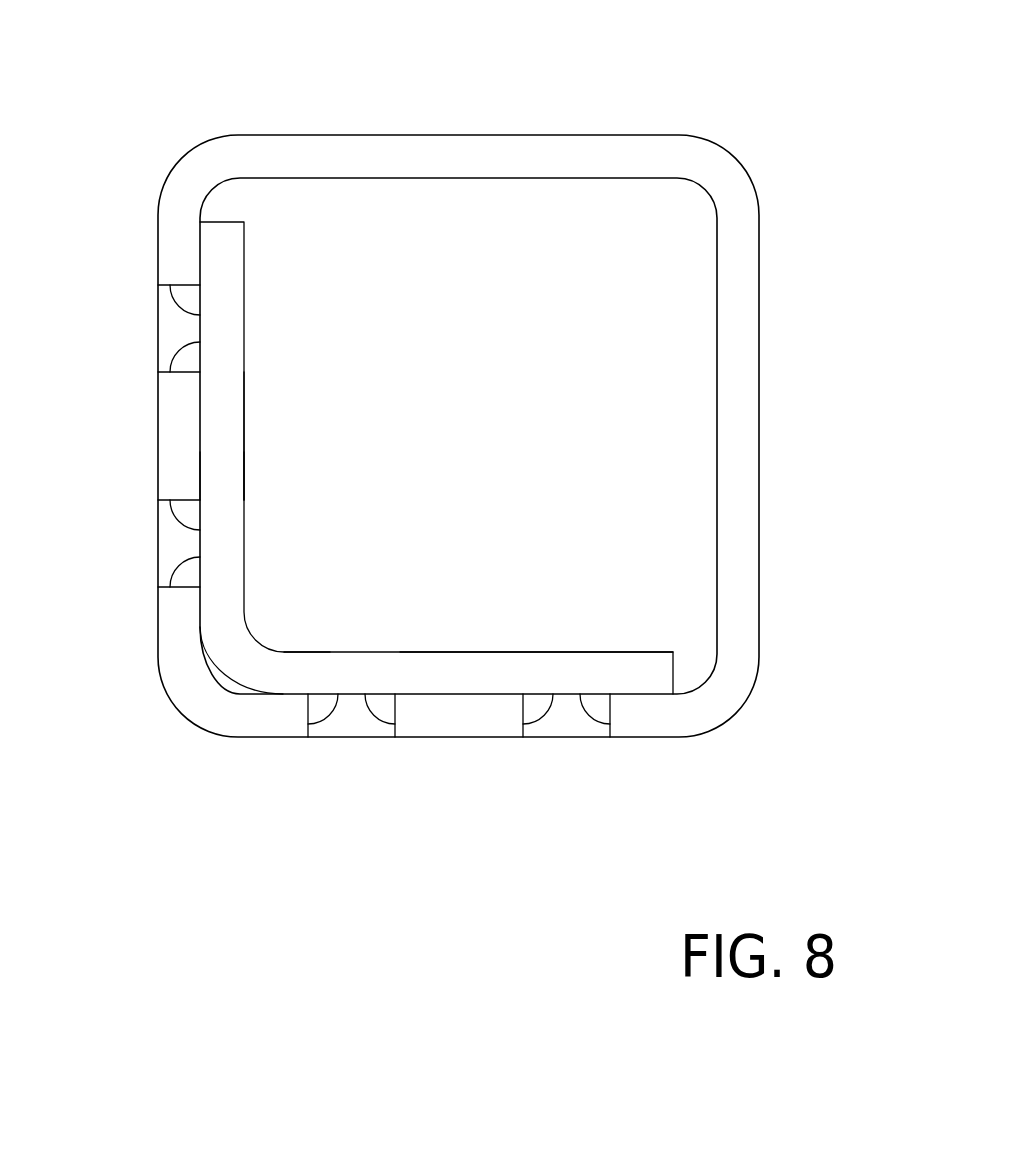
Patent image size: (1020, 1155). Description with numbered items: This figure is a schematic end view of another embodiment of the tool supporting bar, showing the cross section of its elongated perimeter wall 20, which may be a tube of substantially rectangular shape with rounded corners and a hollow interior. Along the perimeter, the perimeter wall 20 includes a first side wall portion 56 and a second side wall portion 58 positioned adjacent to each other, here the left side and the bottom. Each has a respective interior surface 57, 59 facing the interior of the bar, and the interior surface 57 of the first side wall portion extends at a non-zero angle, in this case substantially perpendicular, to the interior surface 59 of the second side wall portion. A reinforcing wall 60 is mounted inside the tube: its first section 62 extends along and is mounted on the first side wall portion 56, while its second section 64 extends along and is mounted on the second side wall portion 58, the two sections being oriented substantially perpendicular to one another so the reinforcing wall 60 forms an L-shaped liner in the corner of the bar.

The perimeter wall 20 is at (402, 163).
The first side wall portion 56 is at (175, 618).
The interior surface of the first side wall portion 57 is at (201, 452).
The second side wall portion 58 is at (442, 718).
The interior surface of the second side wall portion 59 is at (422, 694).
The reinforcing wall 60 is at (220, 242).
The first section 62 is at (228, 465).
The second section 64 is at (303, 668).